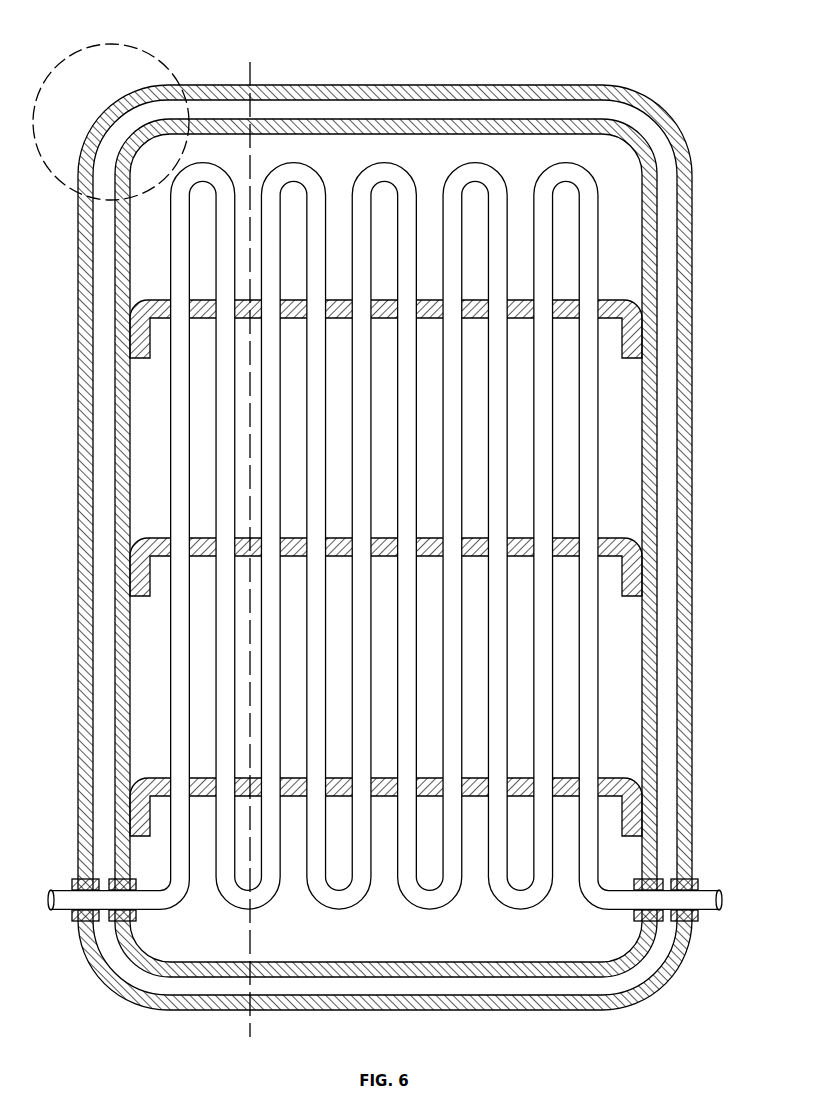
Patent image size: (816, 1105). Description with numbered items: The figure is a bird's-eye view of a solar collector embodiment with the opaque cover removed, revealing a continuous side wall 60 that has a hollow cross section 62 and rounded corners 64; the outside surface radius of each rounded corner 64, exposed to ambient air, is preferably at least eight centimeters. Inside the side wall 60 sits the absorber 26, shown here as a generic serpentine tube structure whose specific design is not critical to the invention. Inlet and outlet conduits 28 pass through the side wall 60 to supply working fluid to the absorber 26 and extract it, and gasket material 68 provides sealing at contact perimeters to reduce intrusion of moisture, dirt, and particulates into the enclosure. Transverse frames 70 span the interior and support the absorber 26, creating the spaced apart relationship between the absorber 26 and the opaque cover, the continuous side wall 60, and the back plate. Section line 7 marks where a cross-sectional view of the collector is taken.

The continuous side wall 60 is at (341, 78).
The hollow cross section 62 is at (372, 116).
The rounded corner 64 is at (65, 60).
The absorber 26 is at (607, 427).
The transverse frame 70 is at (163, 298).
The gasket material 68 is at (75, 882).
The inlet and outlet conduits 28 is at (62, 912).
The section line 7- 7 is at (250, 62).